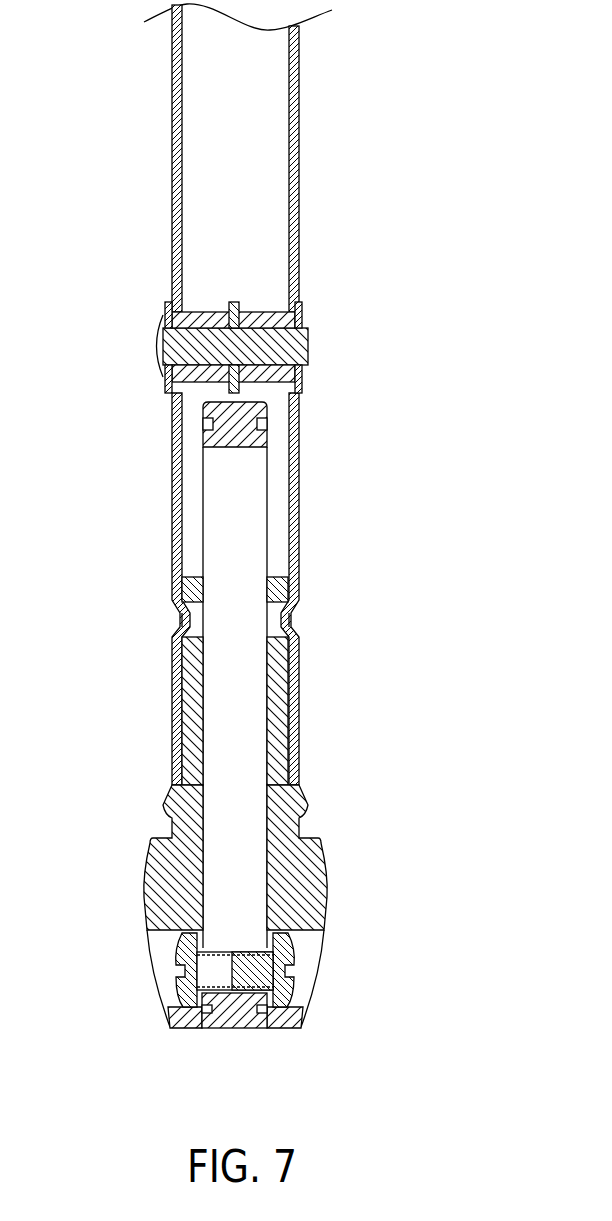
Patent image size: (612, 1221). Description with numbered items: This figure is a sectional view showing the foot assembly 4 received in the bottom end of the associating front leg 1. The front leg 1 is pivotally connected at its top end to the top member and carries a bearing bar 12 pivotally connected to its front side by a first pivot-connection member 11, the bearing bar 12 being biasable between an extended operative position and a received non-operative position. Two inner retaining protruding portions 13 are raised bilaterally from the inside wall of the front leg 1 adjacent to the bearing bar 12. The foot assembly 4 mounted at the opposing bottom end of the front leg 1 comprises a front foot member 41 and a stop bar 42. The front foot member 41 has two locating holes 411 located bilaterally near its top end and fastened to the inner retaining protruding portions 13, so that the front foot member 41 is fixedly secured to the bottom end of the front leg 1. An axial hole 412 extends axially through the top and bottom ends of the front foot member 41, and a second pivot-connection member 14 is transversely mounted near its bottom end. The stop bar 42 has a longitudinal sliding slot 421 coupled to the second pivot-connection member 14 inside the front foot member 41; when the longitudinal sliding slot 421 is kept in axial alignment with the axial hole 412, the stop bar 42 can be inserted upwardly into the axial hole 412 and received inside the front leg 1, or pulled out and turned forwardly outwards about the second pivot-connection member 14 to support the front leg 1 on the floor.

The front leg 1 is at (160, 483).
The first pivot-connection member 11 is at (155, 347).
The bearing bar 12 is at (236, 302).
The inner retaining protruding portions 13 is at (192, 612).
The second pivot-connection member 14 is at (177, 953).
The foot assembly 4 is at (253, 715).
The front foot member 41 is at (325, 905).
The locating holes 411 is at (180, 613).
The axial hole 412 is at (207, 723).
The stop bar 42 is at (293, 675).
The longitudinal sliding slot 421 is at (247, 730).